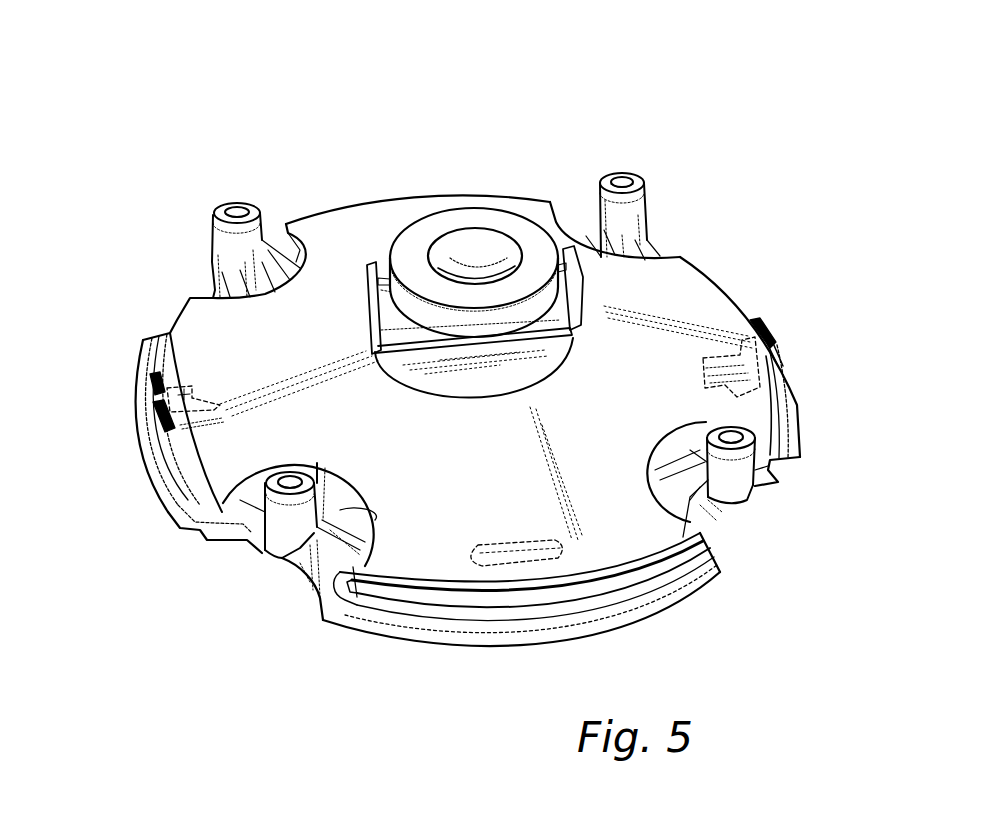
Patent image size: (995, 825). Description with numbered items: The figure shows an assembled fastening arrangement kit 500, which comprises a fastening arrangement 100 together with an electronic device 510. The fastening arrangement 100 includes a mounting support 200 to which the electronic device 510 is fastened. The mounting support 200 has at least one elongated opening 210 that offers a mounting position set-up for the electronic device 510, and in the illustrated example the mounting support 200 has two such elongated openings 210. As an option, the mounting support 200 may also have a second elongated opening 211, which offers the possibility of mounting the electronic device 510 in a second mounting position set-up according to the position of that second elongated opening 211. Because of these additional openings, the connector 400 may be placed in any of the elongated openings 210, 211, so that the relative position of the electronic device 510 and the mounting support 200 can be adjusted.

The fastening arrangement kit 500 is at (592, 110).
The electronic device 510 is at (356, 232).
The fastening arrangement 100 is at (140, 365).
The connector 400 is at (150, 400).
The elongated opening 210 is at (185, 390).
The second elongated opening 211 is at (514, 545).
The mounting support 200 is at (728, 498).